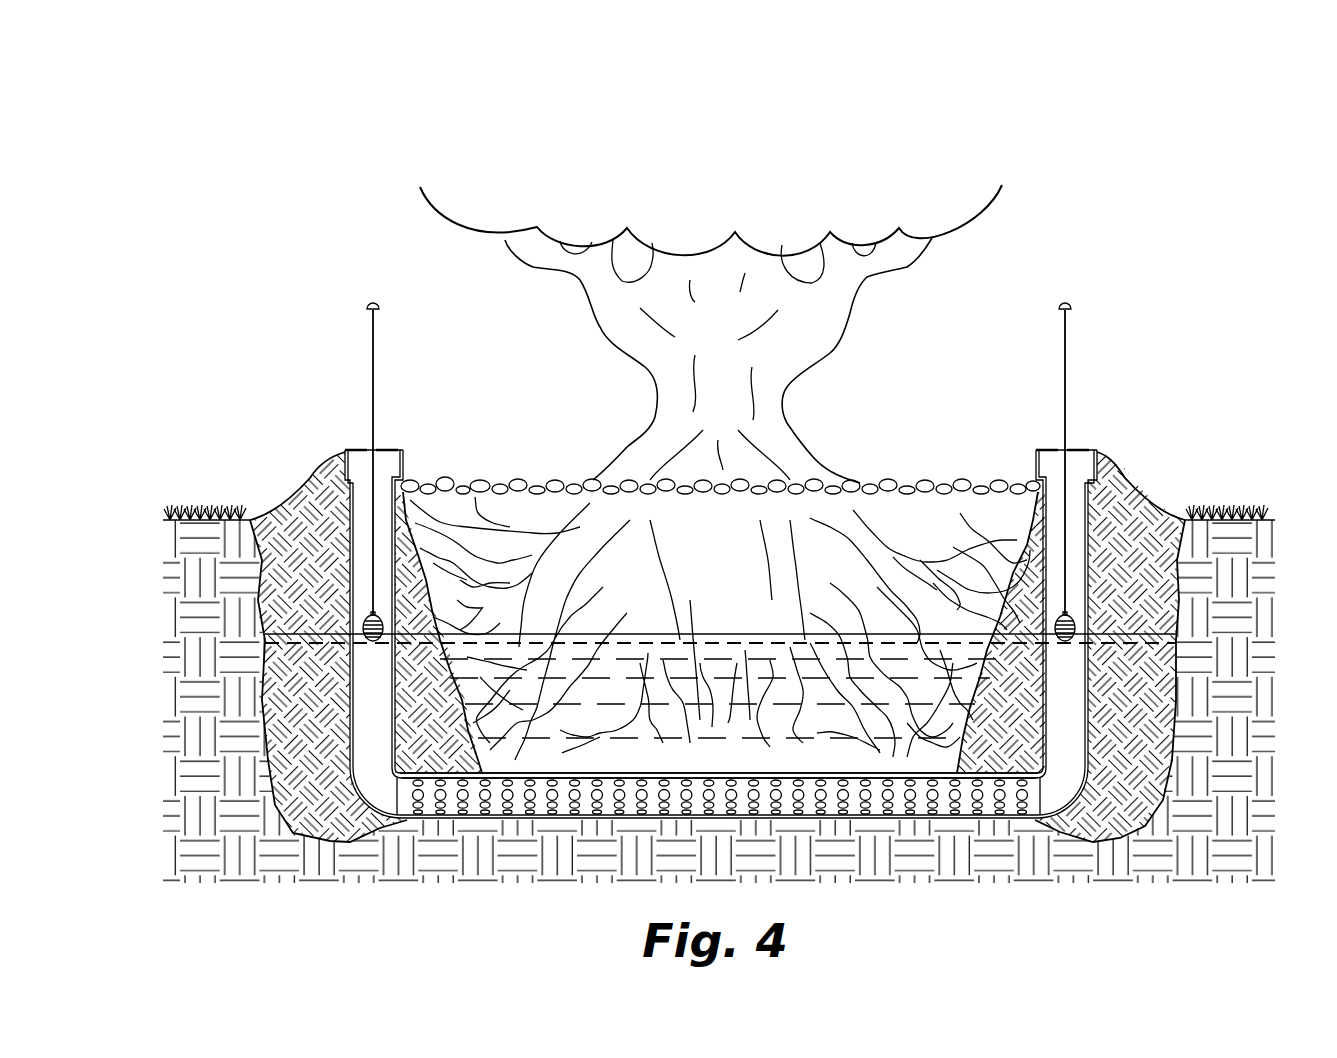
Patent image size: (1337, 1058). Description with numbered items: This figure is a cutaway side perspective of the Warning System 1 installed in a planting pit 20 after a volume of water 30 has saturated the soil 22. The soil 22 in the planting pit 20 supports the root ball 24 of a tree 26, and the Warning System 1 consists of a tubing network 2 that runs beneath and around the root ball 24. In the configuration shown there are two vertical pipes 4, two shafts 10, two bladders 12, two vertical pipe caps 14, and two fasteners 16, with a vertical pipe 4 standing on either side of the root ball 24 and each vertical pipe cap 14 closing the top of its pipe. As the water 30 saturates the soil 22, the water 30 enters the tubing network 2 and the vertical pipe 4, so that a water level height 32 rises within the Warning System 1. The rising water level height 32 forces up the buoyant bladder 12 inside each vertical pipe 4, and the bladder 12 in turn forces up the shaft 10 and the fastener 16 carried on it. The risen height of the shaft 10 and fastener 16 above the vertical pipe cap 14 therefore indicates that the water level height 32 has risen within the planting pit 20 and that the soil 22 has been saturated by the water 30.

The Warning System 1 is at (330, 320).
The tubing network 2 is at (790, 819).
The vertical pipe 4 is at (350, 540).
The shaft 10 is at (372, 355).
The bladder 12 is at (358, 618).
The vertical pipe cap 14 is at (384, 474).
The fastener 16 is at (373, 303).
The planting pit 20 is at (1115, 470).
The soil 22 is at (1120, 545).
The root ball 24 is at (802, 563).
The tree 26 is at (842, 335).
The water 30 is at (680, 762).
The water level height 32 is at (265, 642).